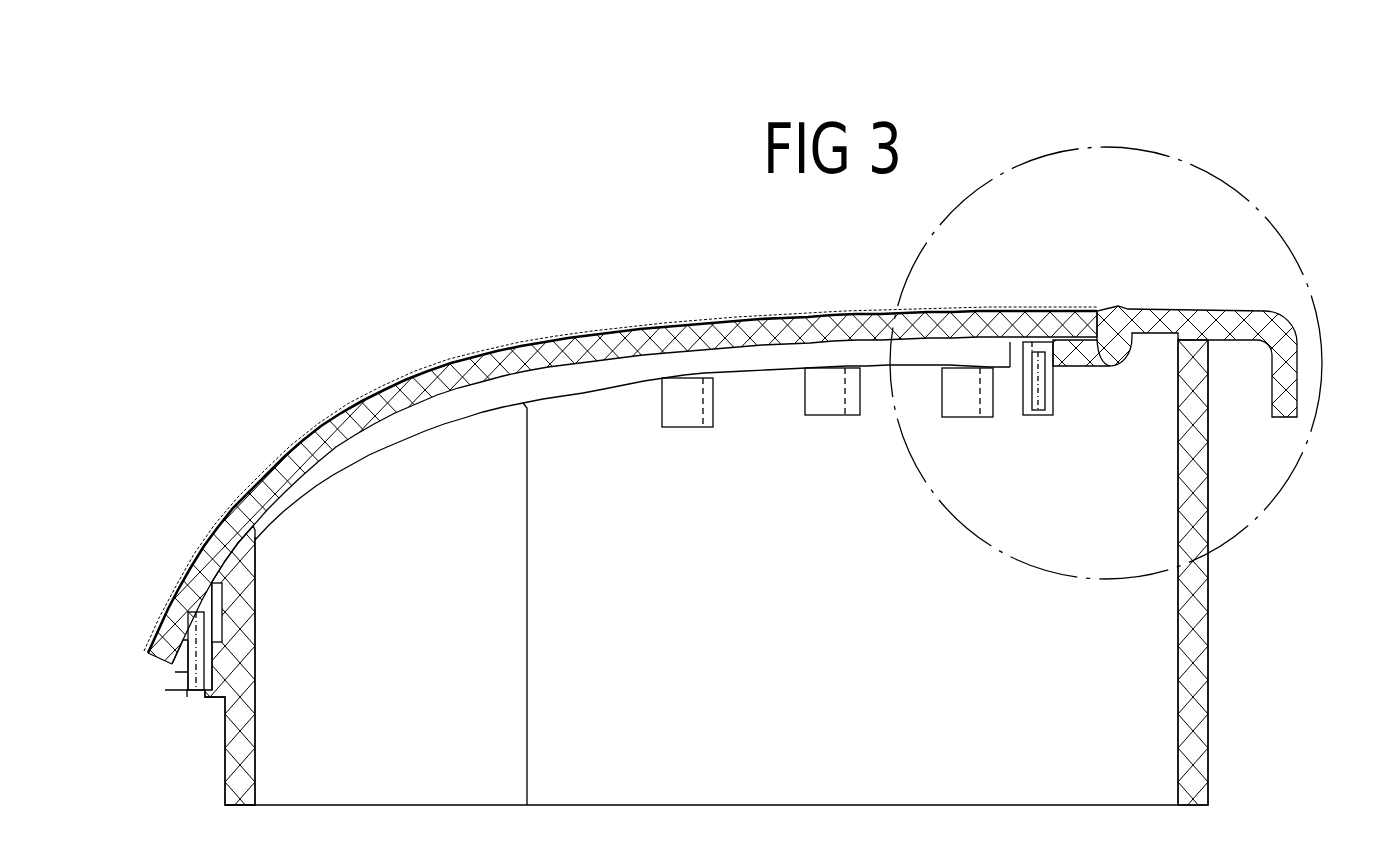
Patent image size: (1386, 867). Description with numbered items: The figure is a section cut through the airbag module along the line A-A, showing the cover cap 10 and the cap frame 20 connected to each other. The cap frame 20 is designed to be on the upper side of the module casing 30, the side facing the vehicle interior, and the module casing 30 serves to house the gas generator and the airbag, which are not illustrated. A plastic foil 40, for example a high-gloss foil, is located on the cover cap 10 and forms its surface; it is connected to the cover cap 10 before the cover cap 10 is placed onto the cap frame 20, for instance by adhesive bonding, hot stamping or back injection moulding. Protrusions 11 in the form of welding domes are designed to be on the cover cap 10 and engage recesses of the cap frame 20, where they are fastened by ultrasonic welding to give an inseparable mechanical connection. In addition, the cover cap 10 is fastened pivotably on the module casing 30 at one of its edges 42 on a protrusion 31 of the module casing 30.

The cover cap 10 is at (677, 333).
The protrusions 11 is at (803, 397).
The cap frame 20 is at (1153, 310).
The module casing 30 is at (1197, 665).
The protrusion 31 is at (178, 672).
The plastic foil 40 is at (595, 340).
The edge 42 is at (185, 690).
The section line A- A is at (1292, 242).